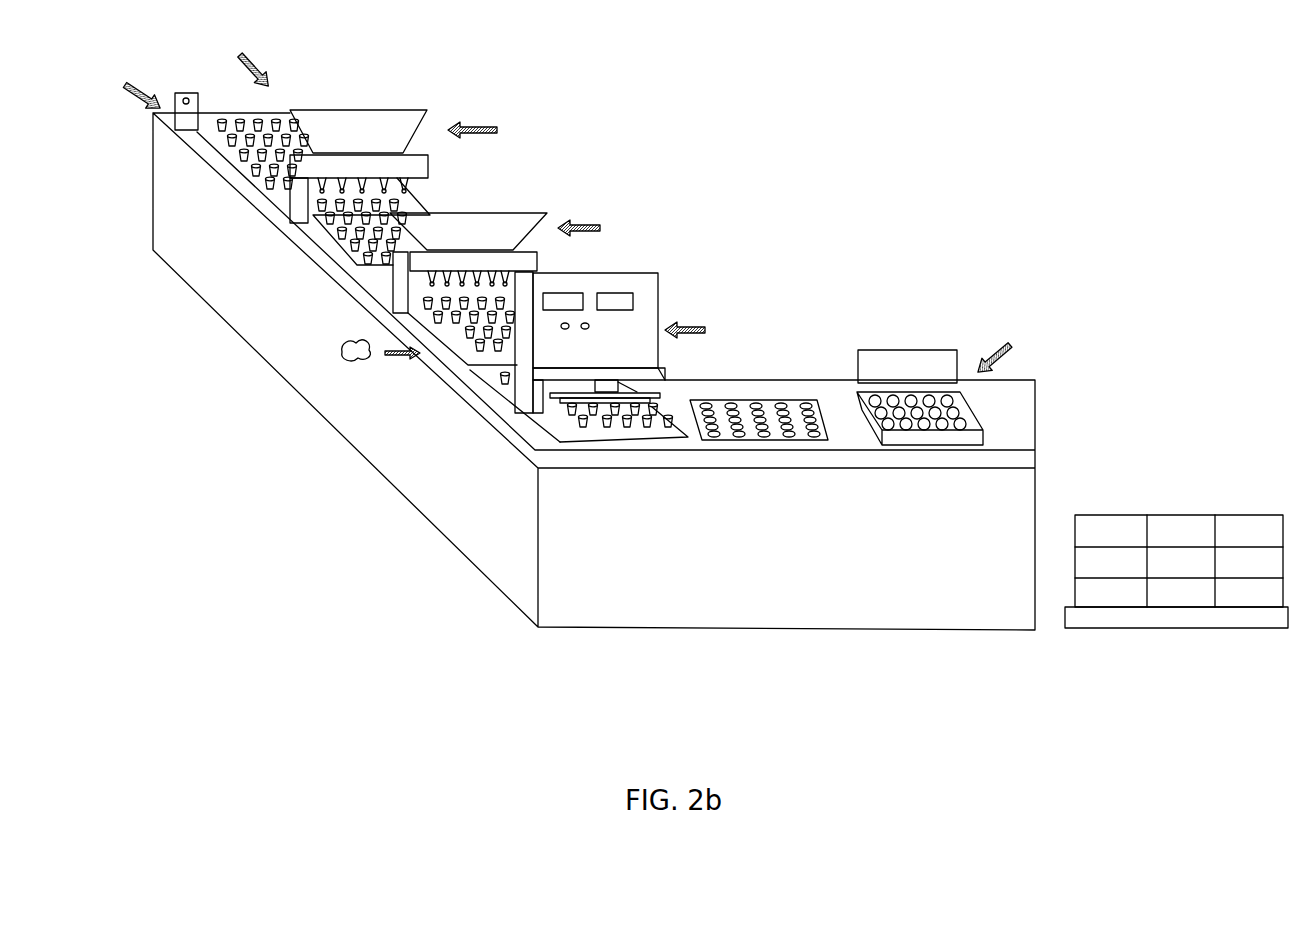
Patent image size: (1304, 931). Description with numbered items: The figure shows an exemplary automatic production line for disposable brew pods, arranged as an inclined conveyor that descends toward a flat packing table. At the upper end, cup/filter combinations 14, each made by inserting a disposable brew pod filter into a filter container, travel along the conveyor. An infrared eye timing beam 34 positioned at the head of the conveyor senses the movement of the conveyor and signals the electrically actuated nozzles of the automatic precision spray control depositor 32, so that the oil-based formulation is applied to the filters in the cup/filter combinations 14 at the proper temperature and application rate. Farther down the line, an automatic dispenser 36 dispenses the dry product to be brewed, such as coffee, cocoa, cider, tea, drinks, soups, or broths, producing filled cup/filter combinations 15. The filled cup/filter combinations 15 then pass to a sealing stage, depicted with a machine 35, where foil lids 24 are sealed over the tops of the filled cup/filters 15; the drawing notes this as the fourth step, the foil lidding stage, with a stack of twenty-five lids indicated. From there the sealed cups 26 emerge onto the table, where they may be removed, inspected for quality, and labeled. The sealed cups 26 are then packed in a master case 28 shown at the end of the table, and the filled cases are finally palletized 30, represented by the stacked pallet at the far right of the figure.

The cup/filter combination 14 is at (223, 177).
The filled cup/filter combination 15 is at (455, 349).
The foil lid 24 is at (347, 354).
The sealed cup 26 is at (594, 448).
The master case 28 is at (912, 440).
The palletized 30 is at (1137, 484).
The automatic precision spray control depositor 32 is at (353, 108).
The infrared eye timing beam 34 is at (158, 122).
The lidding machine 35 is at (638, 272).
The automatic dispenser 36 is at (500, 213).